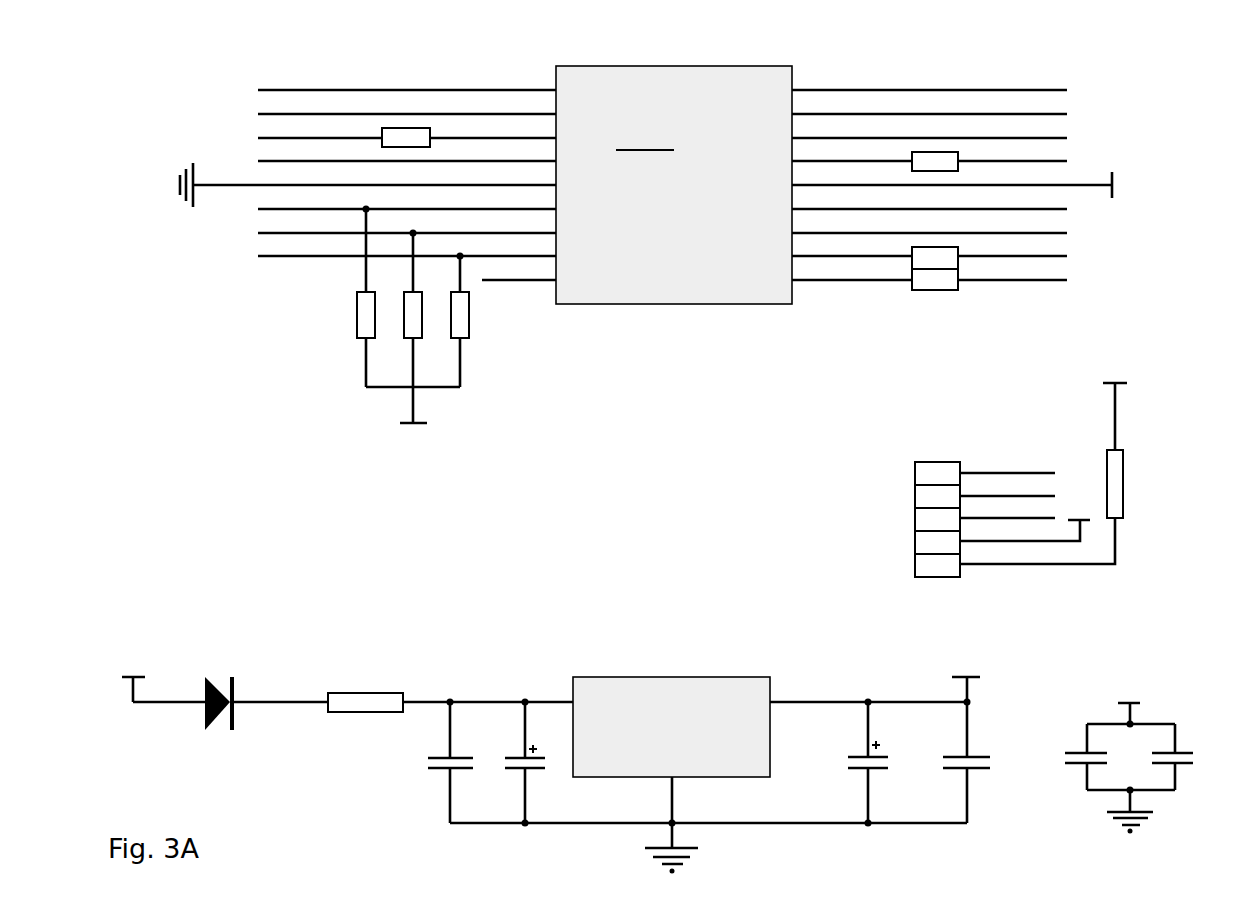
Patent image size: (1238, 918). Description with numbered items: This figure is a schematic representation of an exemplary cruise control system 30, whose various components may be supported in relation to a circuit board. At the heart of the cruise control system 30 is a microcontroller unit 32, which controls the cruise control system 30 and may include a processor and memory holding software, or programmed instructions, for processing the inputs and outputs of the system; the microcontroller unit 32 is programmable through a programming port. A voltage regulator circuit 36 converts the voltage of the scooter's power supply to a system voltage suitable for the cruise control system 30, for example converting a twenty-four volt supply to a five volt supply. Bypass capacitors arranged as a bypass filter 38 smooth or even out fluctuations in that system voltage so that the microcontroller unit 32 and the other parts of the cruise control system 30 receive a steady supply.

The microcontroller unit 32 is at (178, 88).
The cruise control system 30 is at (897, 437).
The voltage regulator circuit 36 is at (262, 615).
The bypass filter 38 is at (1173, 668).